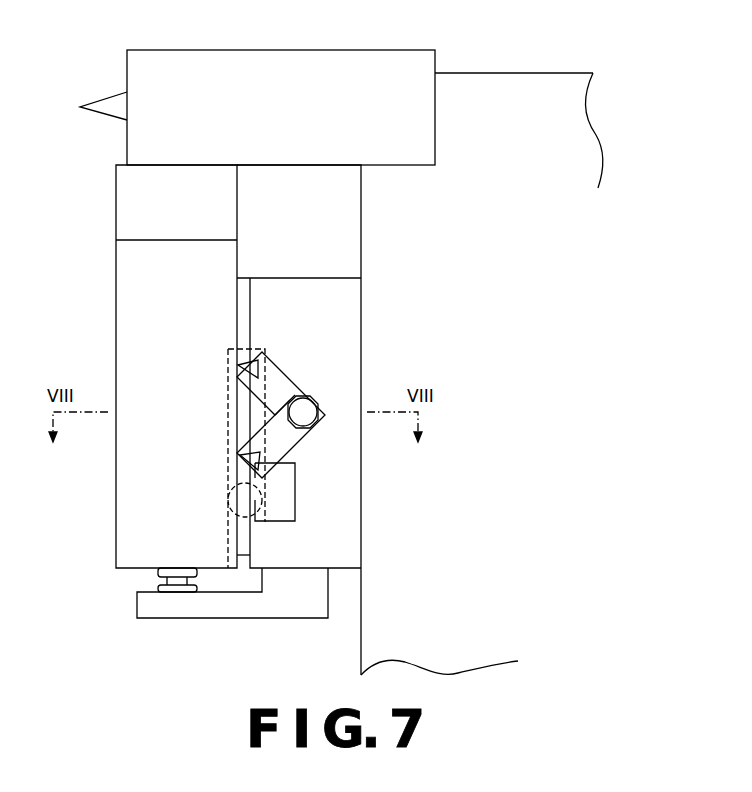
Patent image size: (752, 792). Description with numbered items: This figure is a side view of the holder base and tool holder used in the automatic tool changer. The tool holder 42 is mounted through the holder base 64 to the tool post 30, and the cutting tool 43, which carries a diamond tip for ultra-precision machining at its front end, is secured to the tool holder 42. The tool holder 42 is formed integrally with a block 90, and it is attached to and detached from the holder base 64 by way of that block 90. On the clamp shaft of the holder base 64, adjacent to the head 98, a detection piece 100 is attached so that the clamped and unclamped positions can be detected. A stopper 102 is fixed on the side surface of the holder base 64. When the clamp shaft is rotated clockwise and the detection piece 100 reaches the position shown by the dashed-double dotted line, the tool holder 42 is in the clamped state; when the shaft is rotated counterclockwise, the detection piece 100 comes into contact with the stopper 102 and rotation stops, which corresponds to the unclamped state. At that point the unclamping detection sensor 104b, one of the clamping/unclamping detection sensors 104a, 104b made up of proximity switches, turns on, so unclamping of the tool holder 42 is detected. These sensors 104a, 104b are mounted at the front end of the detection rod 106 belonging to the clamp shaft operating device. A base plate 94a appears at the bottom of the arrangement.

The tool holder 42 is at (240, 70).
The tool post 30 is at (524, 97).
The cutting tool 43 is at (106, 104).
The block 90 is at (135, 296).
The holder base 64 is at (338, 306).
The head 98 is at (306, 411).
The clamping detection sensor 104a is at (253, 386).
The unclamping detection sensor 104b is at (237, 451).
The detection rod 106 is at (228, 500).
The detection piece 100 is at (278, 437).
The stopper 102 is at (285, 502).
The base plate 94a is at (232, 680).